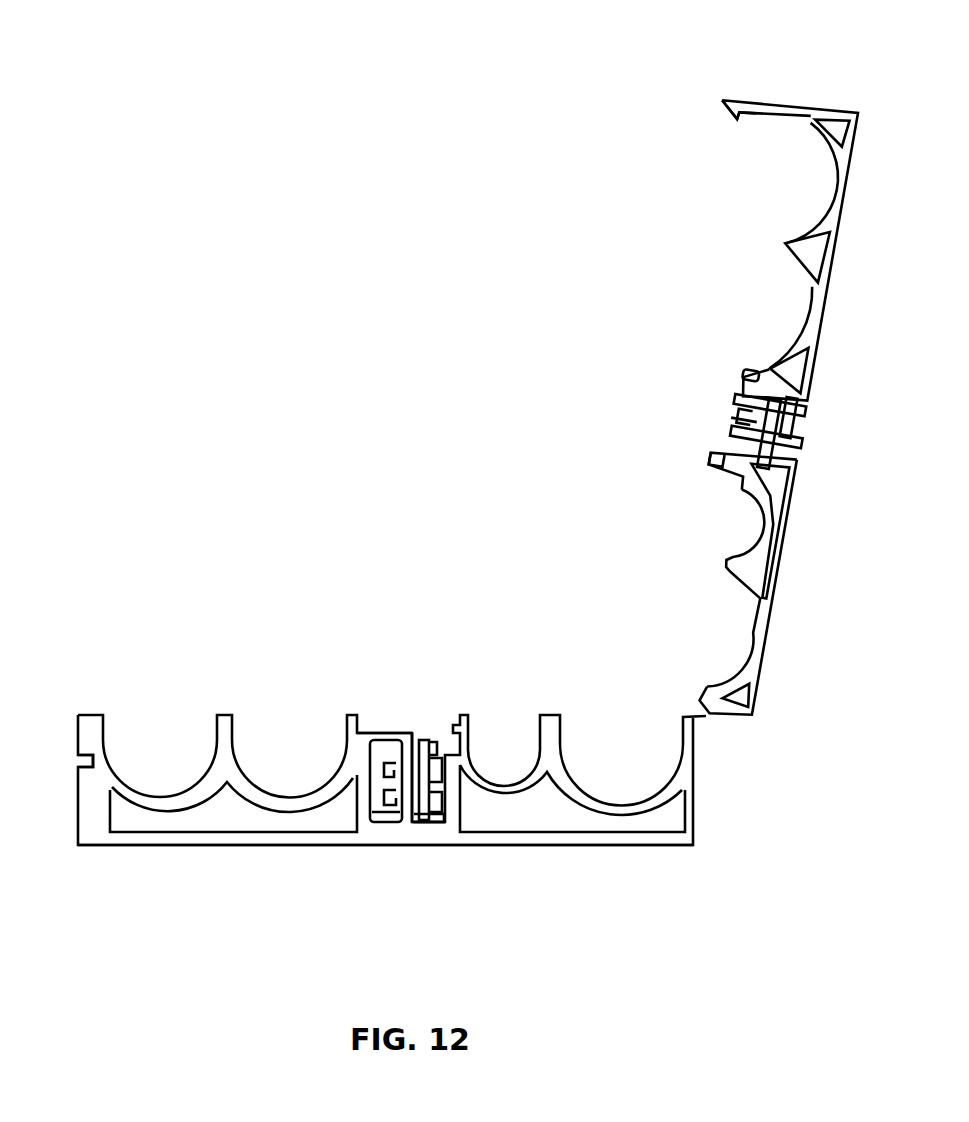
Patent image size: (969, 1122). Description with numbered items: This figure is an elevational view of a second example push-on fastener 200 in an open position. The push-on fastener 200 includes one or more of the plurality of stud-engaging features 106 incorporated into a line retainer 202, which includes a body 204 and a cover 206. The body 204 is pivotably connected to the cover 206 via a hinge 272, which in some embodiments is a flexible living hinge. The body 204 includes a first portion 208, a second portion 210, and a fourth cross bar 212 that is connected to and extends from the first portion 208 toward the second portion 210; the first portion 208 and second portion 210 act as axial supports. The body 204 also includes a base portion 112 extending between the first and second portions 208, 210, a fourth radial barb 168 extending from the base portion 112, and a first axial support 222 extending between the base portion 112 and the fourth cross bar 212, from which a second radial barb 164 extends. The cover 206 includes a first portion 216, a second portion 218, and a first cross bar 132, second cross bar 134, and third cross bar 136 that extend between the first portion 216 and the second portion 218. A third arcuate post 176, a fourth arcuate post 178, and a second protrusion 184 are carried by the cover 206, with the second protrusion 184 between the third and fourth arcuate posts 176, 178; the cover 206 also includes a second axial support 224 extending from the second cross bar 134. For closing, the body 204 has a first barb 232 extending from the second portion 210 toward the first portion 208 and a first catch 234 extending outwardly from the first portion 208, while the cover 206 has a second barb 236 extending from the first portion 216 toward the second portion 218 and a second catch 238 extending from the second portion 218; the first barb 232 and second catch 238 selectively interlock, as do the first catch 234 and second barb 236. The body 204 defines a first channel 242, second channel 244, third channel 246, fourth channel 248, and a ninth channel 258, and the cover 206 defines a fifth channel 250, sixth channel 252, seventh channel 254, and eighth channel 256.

The push-on fastener 200 is at (150, 72).
The line retainer 202 is at (752, 778).
The body 204 is at (123, 845).
The cover 206 is at (761, 212).
The first portion 208 is at (232, 822).
The second portion 210 is at (566, 824).
The fourth cross bar 212 is at (366, 740).
The first portion 216 is at (830, 258).
The second portion 218 is at (720, 599).
The first axial support 222 is at (407, 780).
The second axial support 224 is at (737, 425).
The first barb 232 is at (435, 738).
The first catch 234 is at (95, 765).
The second barb 236 is at (725, 112).
The second catch 238 is at (715, 463).
The first channel 242 is at (165, 748).
The second channel 244 is at (293, 750).
The third channel 246 is at (515, 748).
The fourth channel 248 is at (625, 750).
The fifth channel 250 is at (718, 635).
The sixth channel 252 is at (731, 555).
The seventh channel 254 is at (780, 333).
The eighth channel 256 is at (796, 208).
The ninth channel 258 is at (376, 740).
The hinge 272 is at (712, 716).
The stud-engaging features 106 is at (640, 606).
The base portion 112 is at (413, 830).
The first cross bar 132 is at (790, 418).
The second cross bar 134 is at (765, 440).
The third cross bar 136 is at (747, 400).
The second radial barb 164 is at (393, 776).
The fourth radial barb 168 is at (440, 812).
The third arcuate post 176 is at (743, 410).
The fourth arcuate post 178 is at (718, 447).
The second protrusion 184 is at (790, 435).